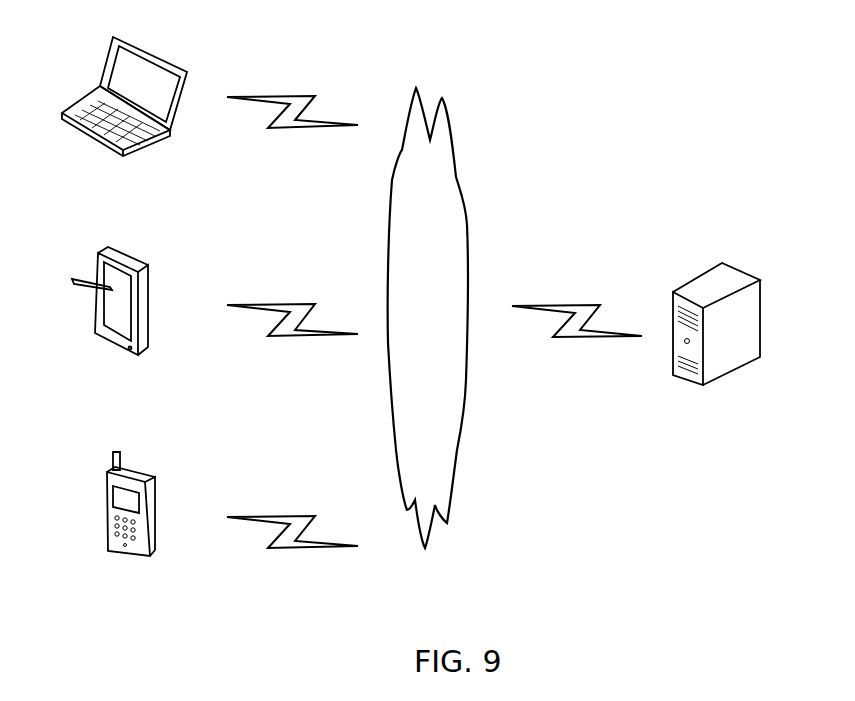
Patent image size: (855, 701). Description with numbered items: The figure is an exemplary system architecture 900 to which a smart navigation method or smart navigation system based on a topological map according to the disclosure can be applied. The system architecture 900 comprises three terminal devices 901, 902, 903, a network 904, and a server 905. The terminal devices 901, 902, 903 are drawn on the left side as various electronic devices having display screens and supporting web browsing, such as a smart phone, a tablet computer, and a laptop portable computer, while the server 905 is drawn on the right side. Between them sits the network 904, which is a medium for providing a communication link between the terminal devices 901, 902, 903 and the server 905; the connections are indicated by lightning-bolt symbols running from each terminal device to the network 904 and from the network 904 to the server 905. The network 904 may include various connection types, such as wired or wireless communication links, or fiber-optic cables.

The system architecture 900 is at (633, 33).
The terminal device 901 is at (131, 519).
The terminal device 902 is at (110, 320).
The terminal device 903 is at (124, 114).
The network 904 is at (428, 318).
The server 905 is at (716, 341).